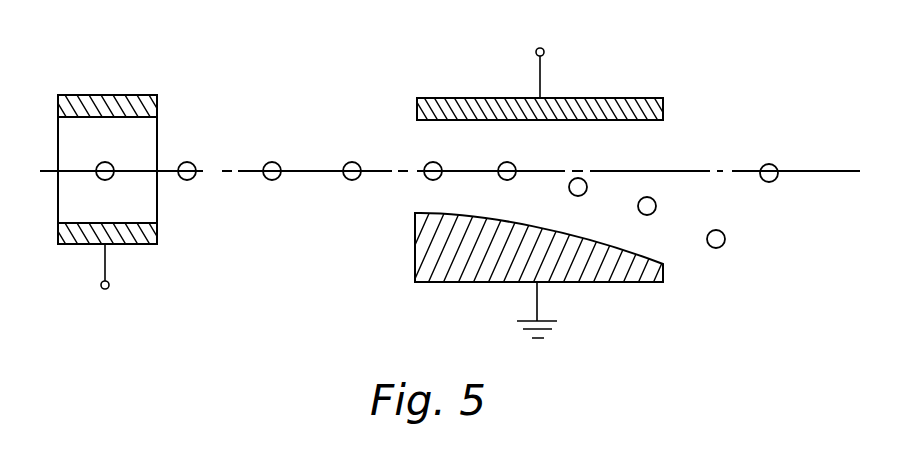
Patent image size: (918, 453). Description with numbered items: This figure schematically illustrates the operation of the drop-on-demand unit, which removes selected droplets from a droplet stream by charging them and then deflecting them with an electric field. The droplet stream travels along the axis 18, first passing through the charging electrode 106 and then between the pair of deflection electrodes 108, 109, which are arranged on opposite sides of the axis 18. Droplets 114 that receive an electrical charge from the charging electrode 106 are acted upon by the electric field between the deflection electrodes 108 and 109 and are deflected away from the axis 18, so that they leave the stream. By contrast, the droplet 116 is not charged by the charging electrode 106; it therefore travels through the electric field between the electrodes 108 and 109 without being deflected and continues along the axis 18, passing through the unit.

The axis 18 is at (840, 171).
The charging electrode 106 is at (122, 95).
The deflection electrode 108 is at (478, 98).
The deflection electrode 109 is at (483, 282).
The droplets 114 is at (708, 232).
The droplet 116 is at (769, 164).